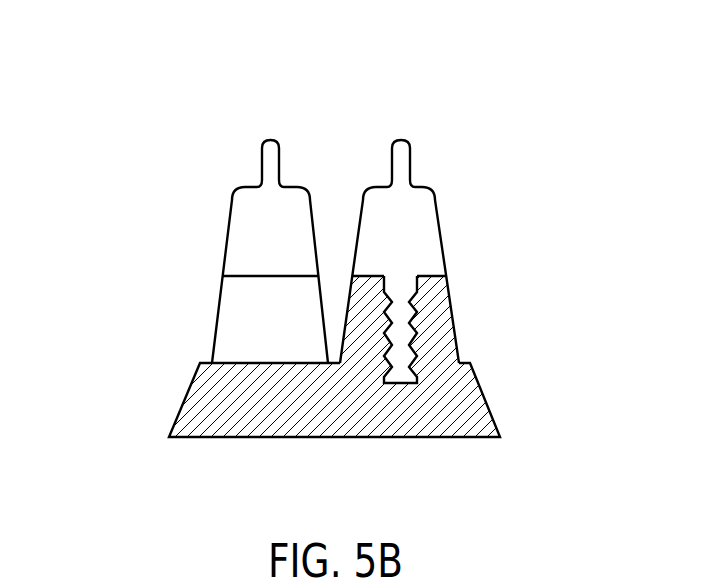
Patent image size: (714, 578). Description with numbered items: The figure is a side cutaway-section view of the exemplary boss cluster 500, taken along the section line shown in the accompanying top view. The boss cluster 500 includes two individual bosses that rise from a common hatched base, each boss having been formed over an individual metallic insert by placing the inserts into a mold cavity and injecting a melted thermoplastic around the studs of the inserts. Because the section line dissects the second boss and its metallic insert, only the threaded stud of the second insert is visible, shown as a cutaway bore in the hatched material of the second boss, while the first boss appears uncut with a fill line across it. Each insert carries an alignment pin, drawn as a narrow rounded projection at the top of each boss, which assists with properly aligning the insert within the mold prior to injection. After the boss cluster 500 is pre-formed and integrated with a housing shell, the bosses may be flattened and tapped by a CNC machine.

The boss cluster 500 is at (199, 363).